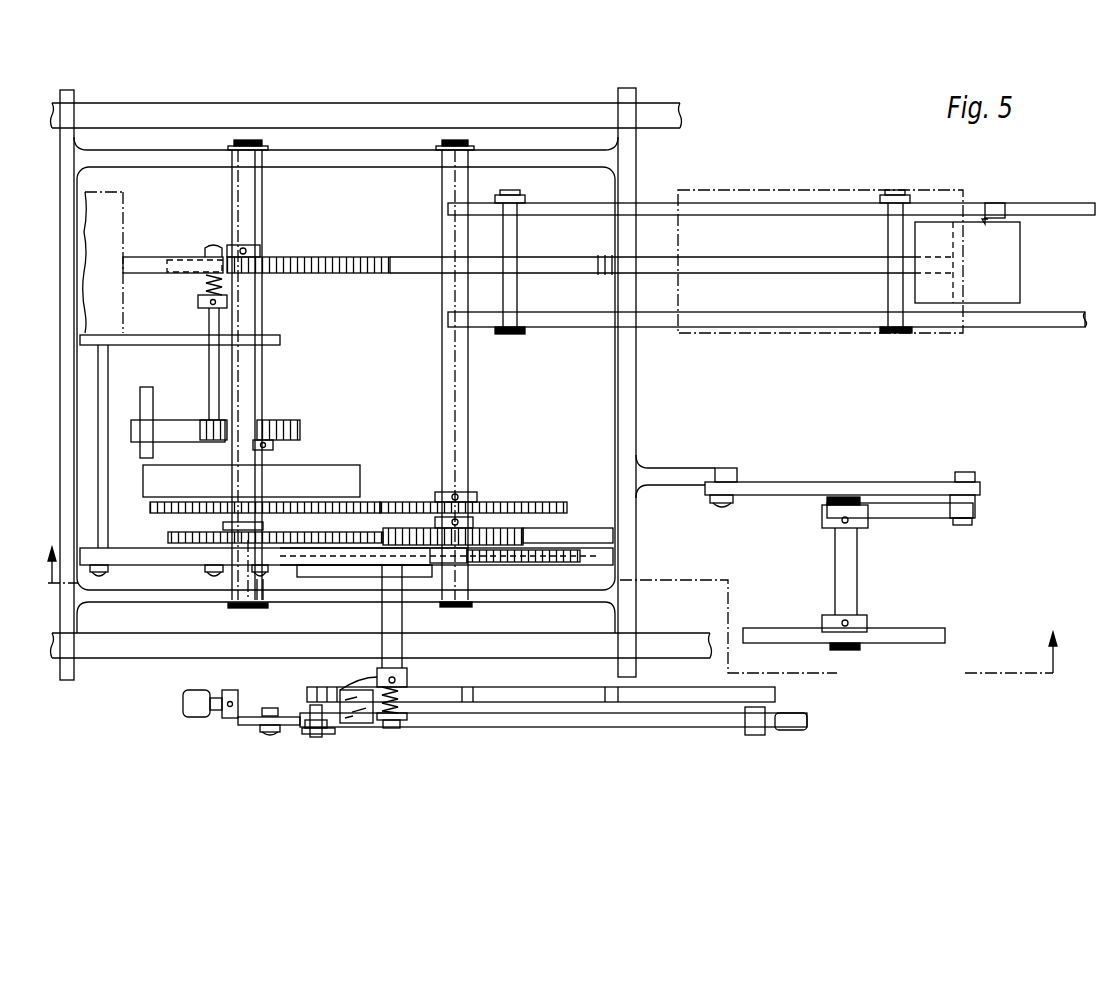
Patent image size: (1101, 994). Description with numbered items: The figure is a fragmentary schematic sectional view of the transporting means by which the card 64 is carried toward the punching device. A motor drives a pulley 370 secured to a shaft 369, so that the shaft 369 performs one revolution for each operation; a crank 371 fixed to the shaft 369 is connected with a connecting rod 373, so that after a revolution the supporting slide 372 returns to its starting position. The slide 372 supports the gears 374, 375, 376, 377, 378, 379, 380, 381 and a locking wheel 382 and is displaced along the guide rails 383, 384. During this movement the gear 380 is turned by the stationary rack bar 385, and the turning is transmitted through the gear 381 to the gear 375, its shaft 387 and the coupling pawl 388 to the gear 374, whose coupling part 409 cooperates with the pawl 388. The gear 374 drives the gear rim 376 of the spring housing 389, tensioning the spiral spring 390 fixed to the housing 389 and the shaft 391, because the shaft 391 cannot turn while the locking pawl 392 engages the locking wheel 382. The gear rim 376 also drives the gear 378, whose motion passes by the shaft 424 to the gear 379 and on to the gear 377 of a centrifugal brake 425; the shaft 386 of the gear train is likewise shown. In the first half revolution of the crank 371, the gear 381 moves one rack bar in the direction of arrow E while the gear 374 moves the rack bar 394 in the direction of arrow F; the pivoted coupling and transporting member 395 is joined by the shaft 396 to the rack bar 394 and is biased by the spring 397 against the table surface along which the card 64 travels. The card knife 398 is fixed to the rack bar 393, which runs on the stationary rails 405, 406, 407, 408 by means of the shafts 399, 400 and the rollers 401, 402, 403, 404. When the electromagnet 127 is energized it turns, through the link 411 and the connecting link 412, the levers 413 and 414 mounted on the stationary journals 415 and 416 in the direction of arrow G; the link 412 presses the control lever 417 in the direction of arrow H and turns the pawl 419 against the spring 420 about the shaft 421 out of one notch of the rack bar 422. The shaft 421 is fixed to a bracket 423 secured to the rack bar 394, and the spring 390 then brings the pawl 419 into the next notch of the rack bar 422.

The card 64 is at (120, 320).
The electromagnet 127 is at (185, 712).
The shaft 369 is at (847, 550).
The pulley 370 is at (880, 632).
The crank 371 is at (973, 510).
The supporting slide 372 is at (630, 337).
The connecting rod 373 is at (980, 487).
The gear 374 is at (122, 565).
The gear 375 is at (287, 260).
The gear rim 376 is at (278, 557).
The gear 377 is at (297, 505).
The gear 378 is at (600, 556).
The gear 379 is at (410, 505).
The gear 380 is at (500, 532).
The gear 381 is at (385, 260).
The locking wheel 382 is at (277, 423).
The guide rail 383 is at (102, 650).
The guide rail 384 is at (682, 106).
The stationary rack bar 385 is at (605, 532).
The shaft 386 is at (468, 385).
The shaft 387 is at (250, 207).
The coupling pawl 388 is at (223, 543).
The spring housing 389 is at (318, 500).
The spiral spring 390 is at (323, 543).
The shaft 391 is at (262, 183).
The locking pawl 392 is at (177, 420).
The rack bar 393 is at (797, 262).
The rack bar 394 is at (280, 342).
The coupling and transporting member 395 is at (143, 258).
The shaft 396 is at (213, 325).
The spring 397 is at (223, 280).
The card knife 398 is at (988, 293).
The shaft 399 is at (517, 287).
The shaft 400 is at (895, 307).
The roller 401 is at (520, 210).
The roller 402 is at (518, 327).
The roller 403 is at (888, 208).
The roller 404 is at (890, 327).
The stationary rail 405 is at (1037, 194).
The stationary rail 406 is at (1053, 351).
The stationary rail 407 is at (1050, 208).
The stationary rail 408 is at (1070, 318).
The coupling part 409 is at (250, 545).
The link 411 is at (228, 684).
The connecting link 412 is at (537, 725).
The lever 413 is at (240, 722).
The lever 414 is at (807, 717).
The stationary journal 415 is at (267, 730).
The stationary journal 416 is at (760, 730).
The control lever 417 is at (348, 713).
The pawl 419 is at (410, 727).
The spring 420 is at (400, 700).
The shaft 421 is at (397, 612).
The rack bar 422 is at (580, 692).
The bracket 423 is at (337, 567).
The shaft 424 is at (495, 373).
The centrifugal brake 425 is at (270, 470).